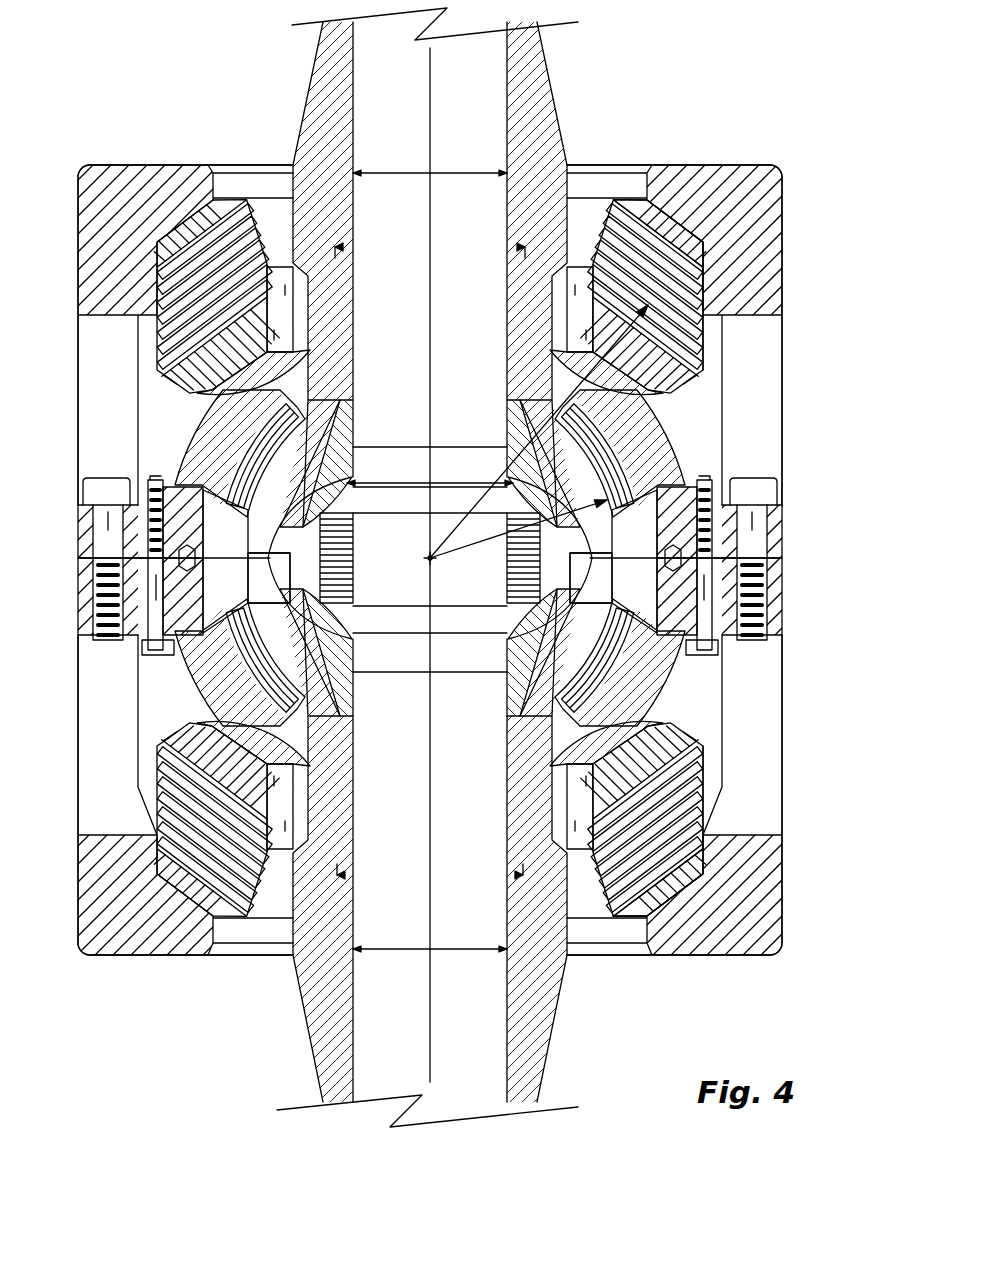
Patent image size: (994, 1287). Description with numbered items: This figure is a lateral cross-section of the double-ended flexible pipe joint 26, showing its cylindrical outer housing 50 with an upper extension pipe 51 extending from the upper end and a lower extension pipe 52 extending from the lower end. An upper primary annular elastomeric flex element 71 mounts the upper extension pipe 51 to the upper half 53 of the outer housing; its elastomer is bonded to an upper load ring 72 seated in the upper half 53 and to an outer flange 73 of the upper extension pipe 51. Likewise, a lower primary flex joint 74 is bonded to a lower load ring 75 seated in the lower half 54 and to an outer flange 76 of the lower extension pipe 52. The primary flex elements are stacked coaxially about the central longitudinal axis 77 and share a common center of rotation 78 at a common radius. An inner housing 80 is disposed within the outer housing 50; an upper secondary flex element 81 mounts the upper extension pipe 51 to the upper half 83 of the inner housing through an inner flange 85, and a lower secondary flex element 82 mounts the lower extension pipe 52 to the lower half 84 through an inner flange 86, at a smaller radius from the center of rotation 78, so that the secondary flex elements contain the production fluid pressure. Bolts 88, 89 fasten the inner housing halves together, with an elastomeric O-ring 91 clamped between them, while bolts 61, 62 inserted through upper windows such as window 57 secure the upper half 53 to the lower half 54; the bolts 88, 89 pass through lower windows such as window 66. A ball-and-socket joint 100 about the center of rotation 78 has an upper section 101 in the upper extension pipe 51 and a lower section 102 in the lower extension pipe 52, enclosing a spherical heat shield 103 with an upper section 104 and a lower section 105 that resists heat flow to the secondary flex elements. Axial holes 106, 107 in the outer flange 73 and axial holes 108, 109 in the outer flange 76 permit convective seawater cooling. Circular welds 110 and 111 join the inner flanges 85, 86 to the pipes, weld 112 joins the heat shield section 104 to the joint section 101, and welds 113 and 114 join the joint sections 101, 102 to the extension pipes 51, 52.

The double-ended flexible pipe joint 26 is at (718, 102).
The outer housing 50 is at (765, 160).
The upper extension pipe 51 is at (551, 95).
The lower extension pipe 52 is at (549, 1047).
The upper half of the outer housing 53 is at (783, 192).
The lower half of the outer housing 54 is at (783, 860).
The upper window 57 is at (90, 378).
The bolt 61 is at (105, 477).
The bolt 62 is at (772, 477).
The lower window 66 is at (90, 730).
The upper primary annular elastomeric flex element 71 is at (705, 288).
The upper load ring 72 is at (700, 258).
The outer flange of the upper extension pipe 73 is at (685, 390).
The lower primary annular elastomeric flex joint 74 is at (695, 815).
The lower load ring 75 is at (630, 925).
The outer flange of the lower extension pipe 76 is at (680, 735).
The central longitudinal axis 77 is at (431, 82).
The common center of rotation 78 is at (433, 562).
The inner housing 80 is at (700, 468).
The upper secondary flex element 81 is at (622, 520).
The lower secondary flex element 82 is at (615, 617).
The upper half of the inner housing 83 is at (660, 445).
The lower half of the inner housing 84 is at (668, 672).
The inner flange of the upper extension pipe 85 is at (592, 520).
The inner flange of the lower extension pipe 86 is at (598, 596).
The bolt 88 is at (155, 660).
The bolt 89 is at (715, 655).
The elastomeric O-ring 91 is at (665, 556).
The ball-and-socket joint 100 is at (272, 538).
The upper section of the ball-and-socket joint 101 is at (355, 432).
The lower section of the ball-and-socket joint 102 is at (355, 668).
The heat shield 103 is at (440, 478).
The upper section of the heat shield 104 is at (358, 548).
The lower section of the heat shield 105 is at (353, 614).
The axial hole 106 is at (280, 352).
The axial hole 107 is at (585, 348).
The axial hole 108 is at (288, 772).
The axial hole 109 is at (580, 775).
The circular weld 110 is at (337, 247).
The circular weld 111 is at (338, 875).
The circular weld 112 is at (350, 482).
The circular weld 113 is at (356, 172).
The circular weld 114 is at (356, 949).